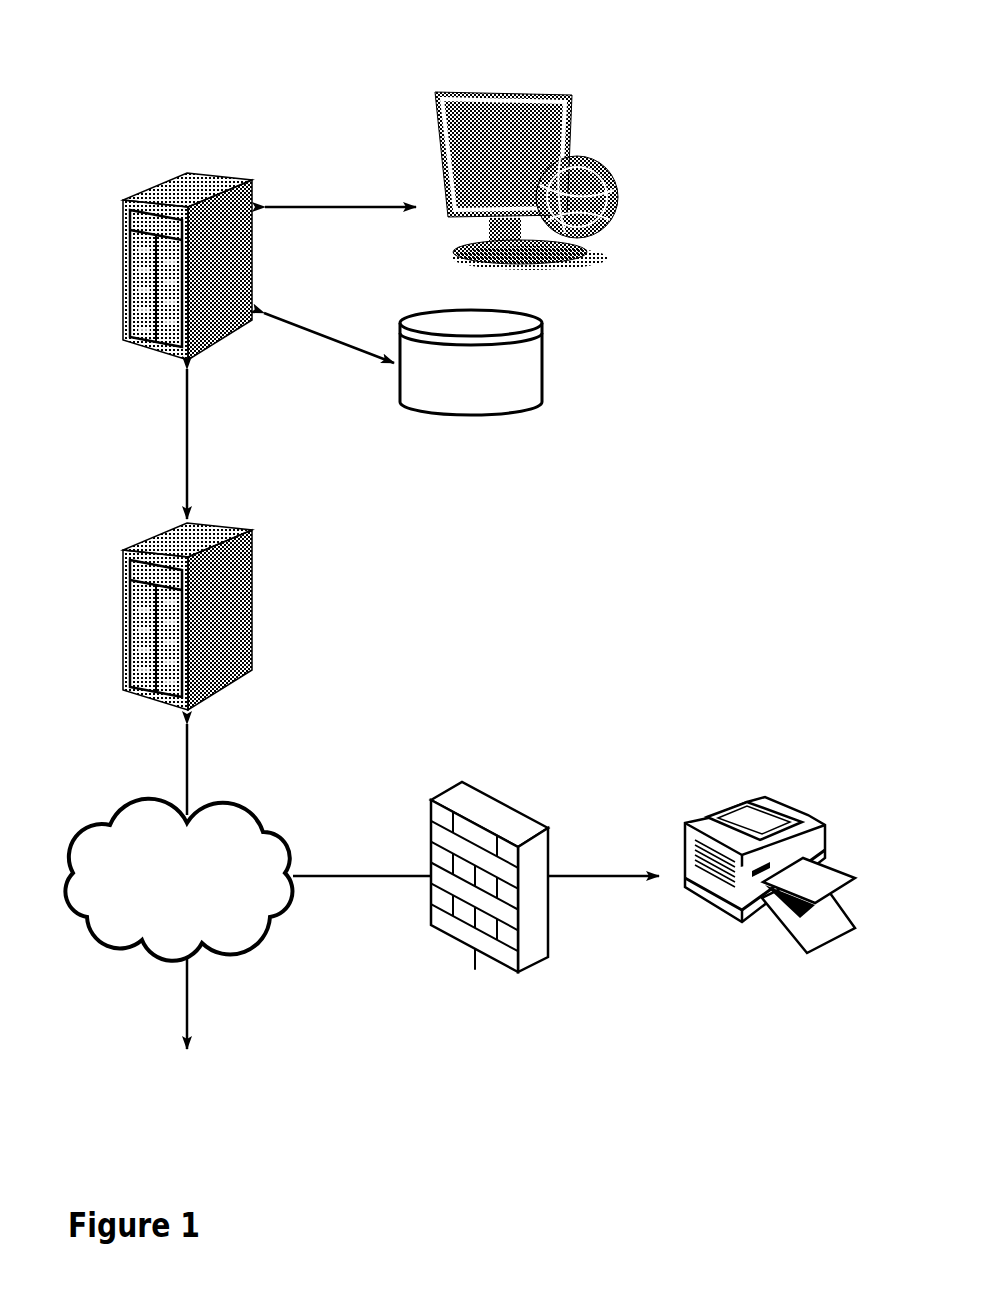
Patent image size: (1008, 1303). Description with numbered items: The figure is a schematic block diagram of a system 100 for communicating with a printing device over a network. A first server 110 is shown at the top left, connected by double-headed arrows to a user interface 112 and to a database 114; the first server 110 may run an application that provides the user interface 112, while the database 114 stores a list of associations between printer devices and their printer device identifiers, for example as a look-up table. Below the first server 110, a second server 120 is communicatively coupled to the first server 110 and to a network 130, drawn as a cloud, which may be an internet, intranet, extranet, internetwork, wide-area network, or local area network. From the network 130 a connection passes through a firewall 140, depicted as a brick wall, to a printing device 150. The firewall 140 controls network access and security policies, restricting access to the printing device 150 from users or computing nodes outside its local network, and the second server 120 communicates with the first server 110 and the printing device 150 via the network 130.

The system 100 is at (729, 146).
The first server 110 is at (253, 183).
The user interface 112 is at (521, 92).
The database 114 is at (542, 396).
The second server 120 is at (253, 574).
The network 130 is at (265, 830).
The firewall 140 is at (475, 788).
The printing device 150 is at (803, 810).